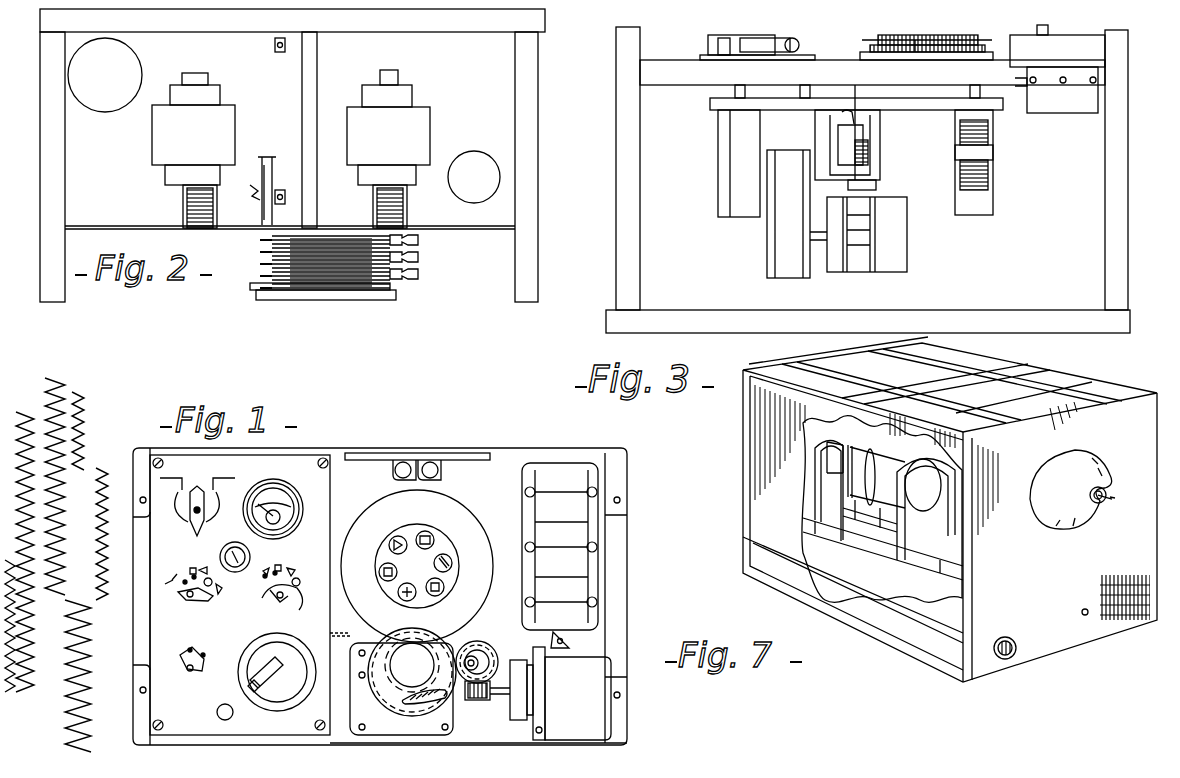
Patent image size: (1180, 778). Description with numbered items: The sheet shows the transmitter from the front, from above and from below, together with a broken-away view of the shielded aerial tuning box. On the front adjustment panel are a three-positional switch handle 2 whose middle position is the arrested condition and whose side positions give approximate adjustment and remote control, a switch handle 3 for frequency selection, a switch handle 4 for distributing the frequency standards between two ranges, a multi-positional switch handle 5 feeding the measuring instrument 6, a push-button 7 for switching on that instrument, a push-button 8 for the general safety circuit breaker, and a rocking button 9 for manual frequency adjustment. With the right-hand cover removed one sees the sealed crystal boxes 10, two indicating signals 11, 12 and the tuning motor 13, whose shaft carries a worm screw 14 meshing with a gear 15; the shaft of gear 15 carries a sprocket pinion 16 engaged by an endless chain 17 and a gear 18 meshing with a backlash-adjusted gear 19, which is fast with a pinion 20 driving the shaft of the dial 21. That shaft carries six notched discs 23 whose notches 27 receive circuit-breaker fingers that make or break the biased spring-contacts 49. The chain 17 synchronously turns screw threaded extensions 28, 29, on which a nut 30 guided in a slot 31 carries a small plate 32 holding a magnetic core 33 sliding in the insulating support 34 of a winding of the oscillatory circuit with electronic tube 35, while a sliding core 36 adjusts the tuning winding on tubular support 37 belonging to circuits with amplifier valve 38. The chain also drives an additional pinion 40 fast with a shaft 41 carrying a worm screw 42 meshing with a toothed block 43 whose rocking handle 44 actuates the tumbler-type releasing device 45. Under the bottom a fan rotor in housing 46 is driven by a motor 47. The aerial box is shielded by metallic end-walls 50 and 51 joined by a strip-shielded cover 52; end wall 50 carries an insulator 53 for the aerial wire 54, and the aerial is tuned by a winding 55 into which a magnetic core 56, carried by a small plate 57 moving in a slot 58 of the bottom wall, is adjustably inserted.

In FIG. 1, the 3-positional switch handle 2 is at (188, 680).
In FIG. 1, the switch handle for frequency selection 3 is at (178, 598).
In FIG. 1, the switch handle for distribution of frequency standards 4 is at (262, 610).
In FIG. 1, the multi-positional switch handle 5 is at (203, 530).
In FIG. 1, the measuring instrument 6 is at (283, 482).
In FIG. 1, the push-button 7 is at (248, 554).
In FIG. 1, the push-button 8 is at (217, 715).
In FIG. 1, the rocking button 9 is at (283, 700).
In FIG. 1, the boxes for the crystals 10 is at (555, 468).
In FIG. 1, the indicating signal 11 is at (398, 478).
In FIG. 1, the indicating signal 12 is at (438, 472).
In FIG. 3, the tuning motor 13 is at (1068, 48).
In FIG. 1, the tuning motor 13 is at (580, 712).
In FIG. 1, the screw 14 is at (500, 700).
In FIG. 1, the gear 15 is at (485, 645).
In FIG. 1, the sprocket pinion 16 is at (492, 660).
In FIG. 3, the chain 17 is at (782, 103).
In FIG. 1, the chain 17 is at (345, 628).
In FIG. 1, the gear 18 is at (470, 700).
In FIG. 1, the gear 19 is at (385, 688).
In FIG. 1, the pinion 20 is at (405, 685).
In FIG. 2, the dial 21 is at (395, 298).
In FIG. 1, the dial 21 is at (460, 515).
In FIG. 2, the notched discs 23 is at (265, 256).
In FIG. 1, the notches 27 is at (570, 642).
In FIG. 2, the screw threaded extension 28 is at (370, 210).
In FIG. 3, the screw threaded extension 28 is at (990, 187).
In FIG. 2, the screw threaded extension 29 is at (205, 212).
In FIG. 3, the nut 30 is at (990, 157).
In FIG. 2, the slot 31 is at (400, 210).
In FIG. 3, the slot 31 is at (990, 135).
In FIG. 2, the small plate 32 is at (405, 182).
In FIG. 2, the magnetic core 33 is at (405, 92).
In FIG. 2, the insulating support 34 is at (420, 120).
In FIG. 2, the electronic tube 35 is at (470, 160).
In FIG. 2, the sliding core 36 is at (210, 96).
In FIG. 2, the tubular support 37 is at (225, 132).
In FIG. 2, the amplifier valve 38 is at (135, 62).
In FIG. 3, the additional pinion 40 is at (870, 102).
In FIG. 3, the shaft 41 is at (862, 133).
In FIG. 3, the screw 42 is at (865, 155).
In FIG. 3, the block 43 is at (842, 117).
In FIG. 3, the rocking handle 44 is at (845, 140).
In FIG. 2, the releasing device 45 is at (258, 180).
In FIG. 3, the housing 46 is at (735, 198).
In FIG. 3, the motor 47 is at (900, 257).
In FIG. 2, the spring-contacts 49 is at (412, 280).
In FIG. 7, the metallic end-wall 50 is at (1040, 650).
In FIG. 7, the metallic end-wall 51 is at (745, 478).
In FIG. 7, the cover 52 is at (1005, 373).
In FIG. 7, the insulator 53 is at (1092, 457).
In FIG. 7, the aerial wire 54 is at (1112, 490).
In FIG. 7, the winding 55 is at (876, 480).
In FIG. 7, the magnetic core 56 is at (831, 458).
In FIG. 7, the small plate 57 is at (823, 495).
In FIG. 7, the slot 58 is at (935, 555).